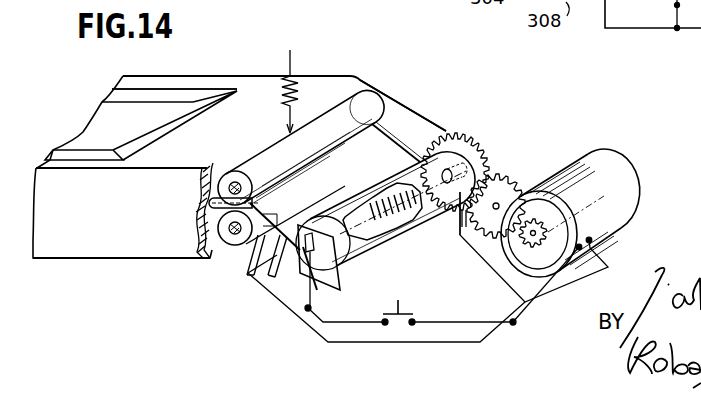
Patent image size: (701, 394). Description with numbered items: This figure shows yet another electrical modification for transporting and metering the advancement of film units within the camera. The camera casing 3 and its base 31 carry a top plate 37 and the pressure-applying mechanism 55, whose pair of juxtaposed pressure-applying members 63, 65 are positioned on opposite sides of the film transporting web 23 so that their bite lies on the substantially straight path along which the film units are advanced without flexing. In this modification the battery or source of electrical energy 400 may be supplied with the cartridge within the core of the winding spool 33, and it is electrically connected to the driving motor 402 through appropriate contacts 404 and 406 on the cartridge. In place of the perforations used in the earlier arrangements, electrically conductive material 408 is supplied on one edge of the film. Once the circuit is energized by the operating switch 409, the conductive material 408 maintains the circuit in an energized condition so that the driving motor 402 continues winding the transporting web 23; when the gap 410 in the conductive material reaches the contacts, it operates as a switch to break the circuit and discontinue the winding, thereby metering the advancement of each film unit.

The copier housing 3 is at (92, 106).
The housing base 31 is at (90, 242).
The top plate 37 is at (210, 82).
The pressure-applying member 63 is at (360, 102).
The pressure-applying member 65 is at (238, 244).
The pressure-applying mechanism 55 is at (380, 120).
The film transporting web 23 is at (385, 151).
The winding spool 33 is at (371, 198).
The battery or source of electrical energy 400 is at (397, 224).
The contact 404 is at (479, 154).
The driving motor 402 is at (610, 173).
The contact 406 is at (333, 269).
The electrically conductive material 408 is at (260, 200).
The operating switch 409 is at (410, 305).
The gap 410 is at (277, 228).